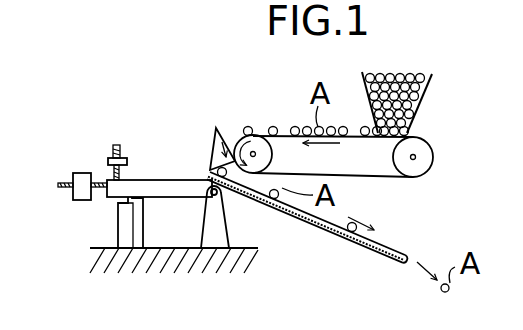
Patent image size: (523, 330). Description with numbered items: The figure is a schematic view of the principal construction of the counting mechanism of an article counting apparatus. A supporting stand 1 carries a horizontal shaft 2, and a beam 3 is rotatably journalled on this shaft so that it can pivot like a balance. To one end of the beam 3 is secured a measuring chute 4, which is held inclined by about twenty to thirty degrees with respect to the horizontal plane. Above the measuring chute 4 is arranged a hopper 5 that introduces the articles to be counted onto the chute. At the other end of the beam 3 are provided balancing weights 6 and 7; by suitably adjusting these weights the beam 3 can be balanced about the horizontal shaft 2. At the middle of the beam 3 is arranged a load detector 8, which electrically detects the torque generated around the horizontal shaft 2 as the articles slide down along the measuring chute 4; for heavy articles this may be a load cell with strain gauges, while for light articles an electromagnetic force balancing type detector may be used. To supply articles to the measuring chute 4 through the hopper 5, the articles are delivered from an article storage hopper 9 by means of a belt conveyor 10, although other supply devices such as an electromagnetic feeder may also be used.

The supporting stand 1 is at (216, 234).
The horizontal shaft 2 is at (226, 193).
The beam 3 is at (163, 178).
The measuring chute 4 is at (317, 229).
The hopper 5 is at (213, 138).
The balancing weight 6 is at (108, 157).
The balancing weight 7 is at (74, 204).
The load detector 8 is at (120, 224).
The article storage hopper 9 is at (430, 91).
The belt conveyor 10 is at (283, 127).